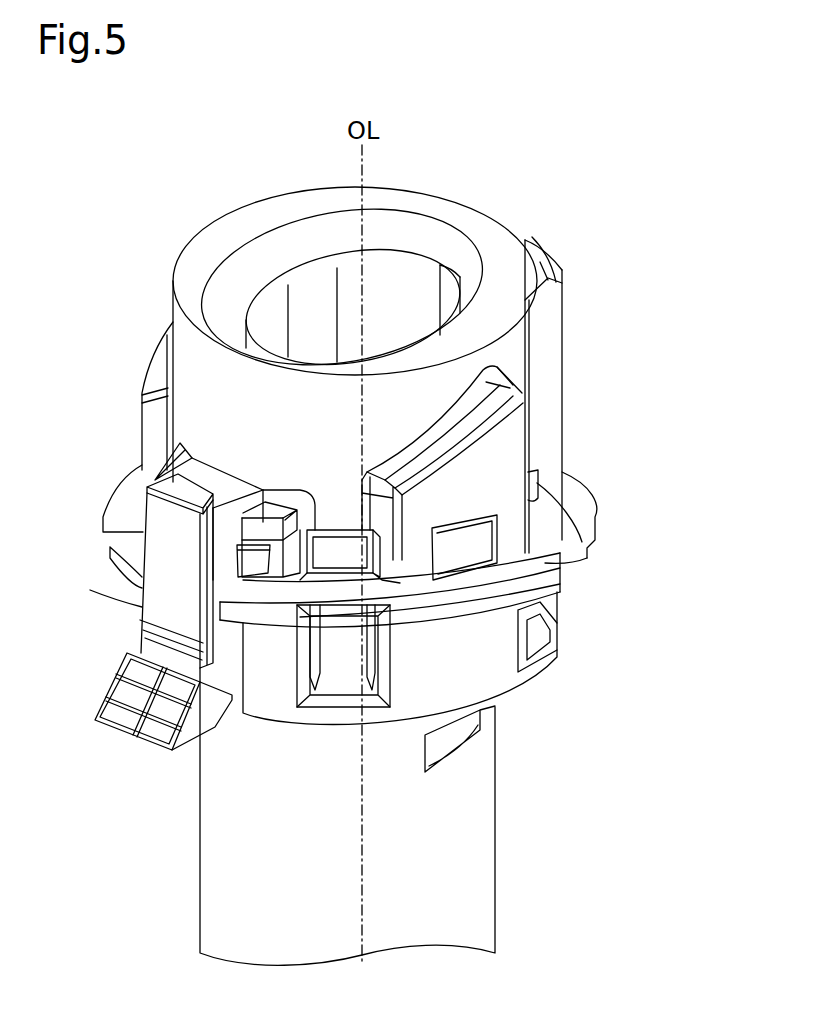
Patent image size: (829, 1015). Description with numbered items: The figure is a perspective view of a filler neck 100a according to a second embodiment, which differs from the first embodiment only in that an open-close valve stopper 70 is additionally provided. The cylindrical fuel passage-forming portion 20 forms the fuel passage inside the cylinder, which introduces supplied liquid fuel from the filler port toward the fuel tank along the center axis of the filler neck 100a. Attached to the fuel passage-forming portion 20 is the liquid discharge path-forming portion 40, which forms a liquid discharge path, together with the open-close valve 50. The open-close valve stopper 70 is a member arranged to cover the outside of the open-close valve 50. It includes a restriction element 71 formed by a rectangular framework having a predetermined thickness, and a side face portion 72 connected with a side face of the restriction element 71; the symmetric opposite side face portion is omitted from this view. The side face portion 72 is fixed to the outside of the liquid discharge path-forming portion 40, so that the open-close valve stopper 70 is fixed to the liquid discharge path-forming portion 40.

The filler neck 100a is at (586, 186).
The fuel passage-forming portion 20 is at (543, 400).
The liquid discharge path-forming portion 40 is at (150, 606).
The open-close valve 50 is at (135, 673).
The open-close valve stopper 70 is at (192, 792).
The restriction element 71 is at (123, 733).
The side face portion 72 is at (189, 735).